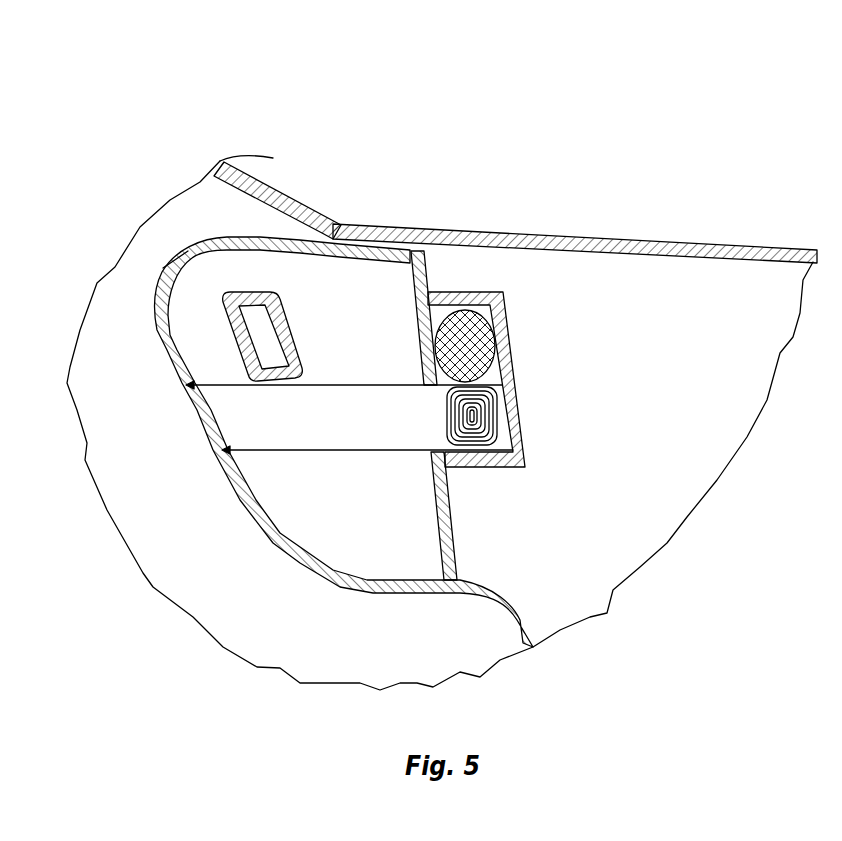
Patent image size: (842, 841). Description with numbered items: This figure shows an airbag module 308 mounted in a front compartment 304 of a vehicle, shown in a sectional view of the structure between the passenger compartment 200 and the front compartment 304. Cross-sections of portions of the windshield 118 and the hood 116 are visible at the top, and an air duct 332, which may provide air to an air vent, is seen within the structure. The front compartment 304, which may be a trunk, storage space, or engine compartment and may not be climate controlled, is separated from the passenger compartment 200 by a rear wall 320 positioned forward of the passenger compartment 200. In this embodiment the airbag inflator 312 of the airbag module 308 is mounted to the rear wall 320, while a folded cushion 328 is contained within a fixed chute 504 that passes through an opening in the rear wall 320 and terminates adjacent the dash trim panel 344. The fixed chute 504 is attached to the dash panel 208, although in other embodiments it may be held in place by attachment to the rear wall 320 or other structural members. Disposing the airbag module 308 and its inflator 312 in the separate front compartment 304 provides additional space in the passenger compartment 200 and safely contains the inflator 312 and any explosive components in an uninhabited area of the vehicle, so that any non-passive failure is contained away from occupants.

The windshield 118 is at (281, 188).
The hood 116 is at (437, 224).
The front compartment 304 is at (575, 184).
The airbag module 308 is at (481, 292).
The inflator 312 is at (490, 338).
The folded cushion 328 is at (488, 413).
The rear wall 320 is at (451, 493).
The air duct 332 is at (277, 293).
The dash trim panel 344 is at (190, 423).
The dash panel 208 is at (320, 442).
The fixed chute 504 is at (338, 449).
The passenger compartment 200 is at (250, 640).